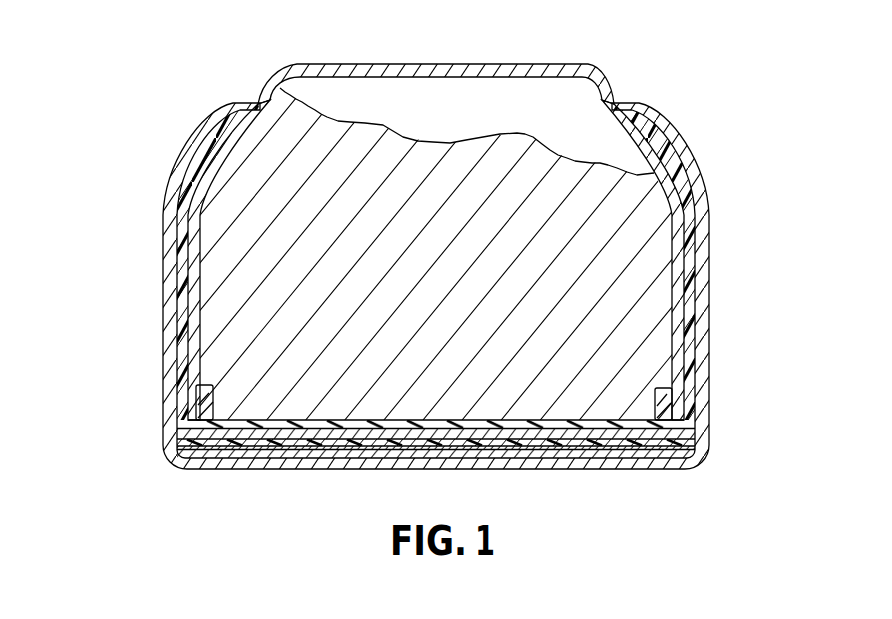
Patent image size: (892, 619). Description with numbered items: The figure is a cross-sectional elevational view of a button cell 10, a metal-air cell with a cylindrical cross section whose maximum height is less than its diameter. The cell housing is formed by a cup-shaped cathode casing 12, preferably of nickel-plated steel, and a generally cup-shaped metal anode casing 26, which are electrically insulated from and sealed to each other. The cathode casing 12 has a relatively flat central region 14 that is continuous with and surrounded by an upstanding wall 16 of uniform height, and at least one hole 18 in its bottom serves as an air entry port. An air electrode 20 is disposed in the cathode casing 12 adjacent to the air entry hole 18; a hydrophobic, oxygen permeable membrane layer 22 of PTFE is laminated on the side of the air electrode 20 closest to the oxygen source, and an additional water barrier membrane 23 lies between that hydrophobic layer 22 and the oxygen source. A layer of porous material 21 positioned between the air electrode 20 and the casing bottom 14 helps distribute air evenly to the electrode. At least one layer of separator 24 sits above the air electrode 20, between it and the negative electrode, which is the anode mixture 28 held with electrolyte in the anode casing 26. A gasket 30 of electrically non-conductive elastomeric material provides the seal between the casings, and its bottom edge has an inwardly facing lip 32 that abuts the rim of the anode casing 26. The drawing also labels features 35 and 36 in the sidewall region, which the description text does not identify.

The button cell 10 is at (446, 274).
The cathode casing 12 is at (163, 236).
The central region 14 is at (307, 446).
The upstanding wall 16 is at (165, 323).
The hole 18 is at (435, 463).
The air electrode 20 is at (645, 433).
The layer of porous material 21 is at (207, 458).
The hydrophobic oxygen permeable membrane layer 22 is at (575, 444).
The water barrier membrane 23 is at (228, 450).
The separator 24 is at (423, 420).
The anode casing 26 is at (420, 64).
The anode mixture 28 is at (472, 153).
The gasket 30 is at (690, 295).
The inwardly facing lip 32 is at (212, 387).
The right stop block 35 is at (678, 400).
The inner liner wall 36 is at (203, 290).